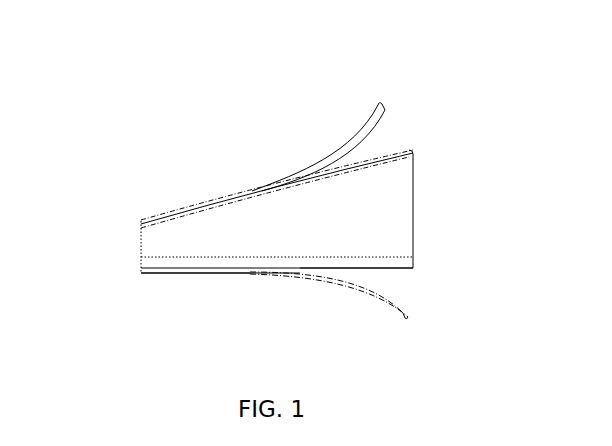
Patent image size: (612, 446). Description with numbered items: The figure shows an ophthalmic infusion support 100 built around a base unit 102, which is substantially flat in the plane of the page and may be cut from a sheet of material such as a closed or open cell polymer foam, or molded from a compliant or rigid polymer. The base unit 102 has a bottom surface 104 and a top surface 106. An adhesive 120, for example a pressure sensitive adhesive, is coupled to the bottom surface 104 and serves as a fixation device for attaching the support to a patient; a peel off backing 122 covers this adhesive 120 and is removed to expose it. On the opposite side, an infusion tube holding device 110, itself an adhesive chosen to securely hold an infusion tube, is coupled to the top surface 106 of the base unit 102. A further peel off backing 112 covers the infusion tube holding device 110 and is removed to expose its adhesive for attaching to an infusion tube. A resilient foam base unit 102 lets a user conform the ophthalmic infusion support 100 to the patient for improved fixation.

The ophthalmic infusion support 100 is at (132, 306).
The base unit 102 is at (173, 238).
The bottom surface 104 is at (227, 260).
The top surface 106 is at (223, 212).
The infusion tube holding device 110 is at (405, 150).
The peel off backing 112 is at (388, 108).
The adhesive 120 is at (397, 265).
The peel off backing 122 is at (410, 310).